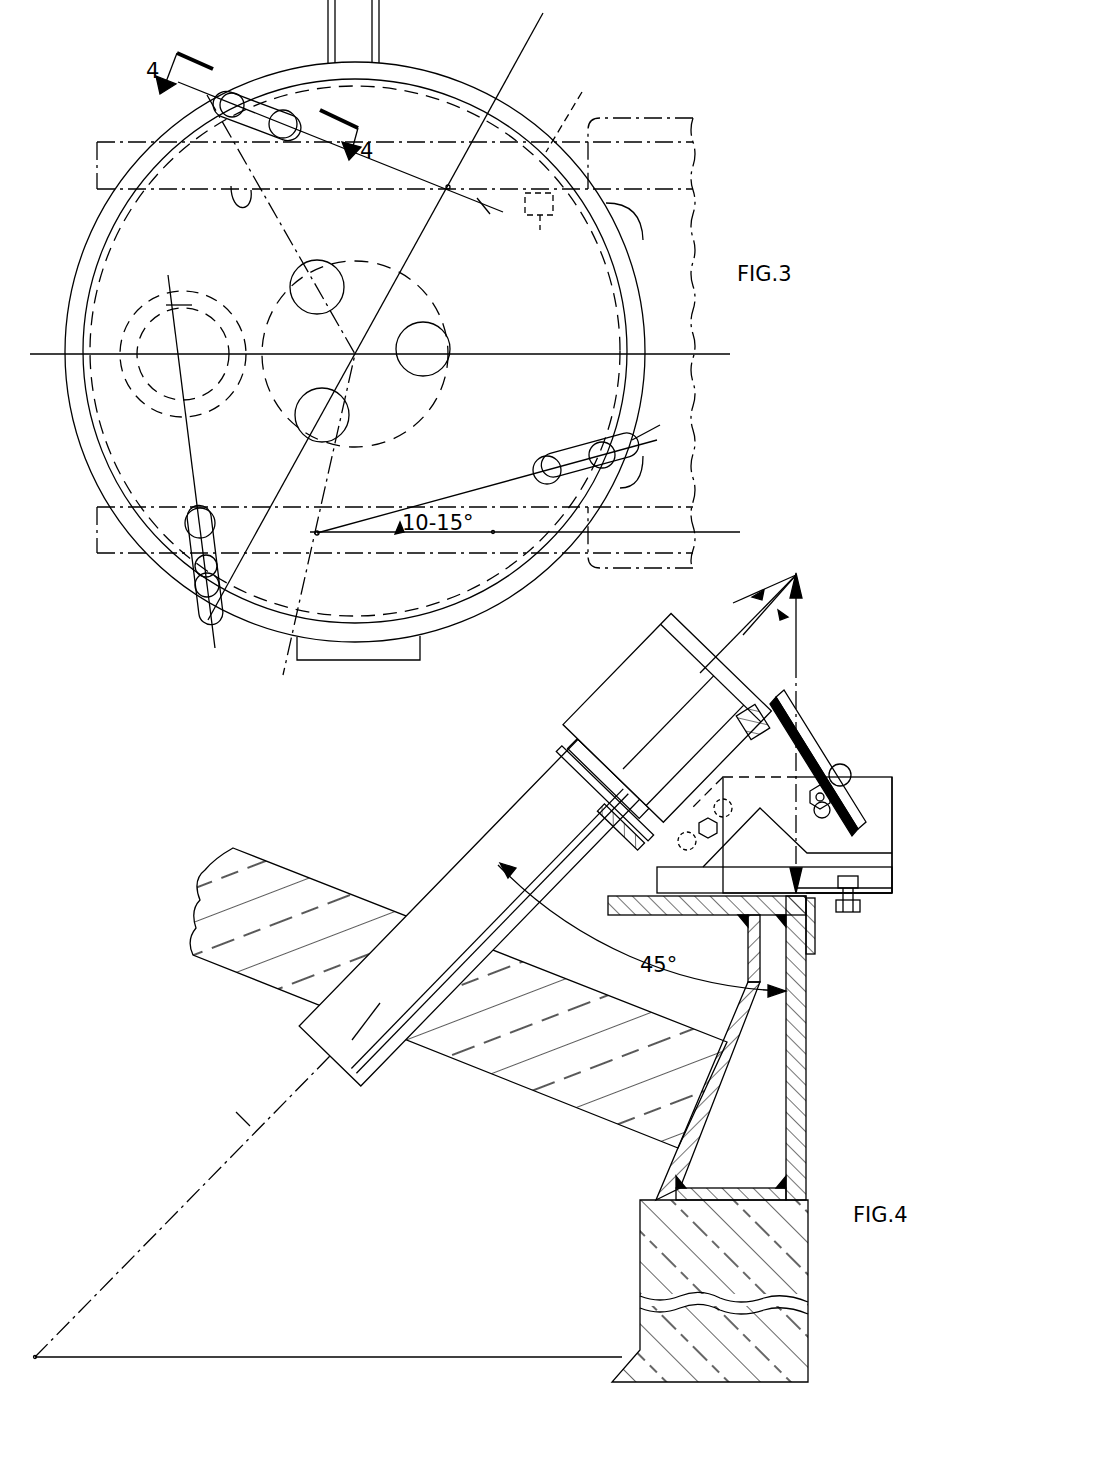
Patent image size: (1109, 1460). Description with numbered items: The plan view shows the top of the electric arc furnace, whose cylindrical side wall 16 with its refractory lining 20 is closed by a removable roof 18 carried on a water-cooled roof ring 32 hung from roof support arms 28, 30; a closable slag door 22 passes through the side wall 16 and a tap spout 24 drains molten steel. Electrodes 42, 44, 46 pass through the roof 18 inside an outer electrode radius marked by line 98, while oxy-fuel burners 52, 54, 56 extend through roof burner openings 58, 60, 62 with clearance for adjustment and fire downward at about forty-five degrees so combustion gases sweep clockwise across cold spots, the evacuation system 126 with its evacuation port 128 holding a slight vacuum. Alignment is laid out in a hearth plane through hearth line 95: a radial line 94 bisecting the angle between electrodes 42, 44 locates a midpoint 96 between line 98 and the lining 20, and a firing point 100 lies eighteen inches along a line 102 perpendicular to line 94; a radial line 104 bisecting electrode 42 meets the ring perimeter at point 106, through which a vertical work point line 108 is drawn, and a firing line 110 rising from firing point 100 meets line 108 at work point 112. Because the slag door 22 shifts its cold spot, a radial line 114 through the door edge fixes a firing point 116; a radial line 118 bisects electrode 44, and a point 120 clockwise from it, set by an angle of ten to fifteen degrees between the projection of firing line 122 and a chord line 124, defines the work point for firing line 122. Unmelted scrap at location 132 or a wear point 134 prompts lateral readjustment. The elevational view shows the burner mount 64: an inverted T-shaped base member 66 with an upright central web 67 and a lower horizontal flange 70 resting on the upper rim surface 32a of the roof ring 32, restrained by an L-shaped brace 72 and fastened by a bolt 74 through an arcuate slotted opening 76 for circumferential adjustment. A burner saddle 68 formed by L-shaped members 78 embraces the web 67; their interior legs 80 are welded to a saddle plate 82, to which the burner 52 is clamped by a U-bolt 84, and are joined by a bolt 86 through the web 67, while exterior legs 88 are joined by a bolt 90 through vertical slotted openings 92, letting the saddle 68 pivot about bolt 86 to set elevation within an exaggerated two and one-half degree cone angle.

In FIG. 4, the cylindrical side wall 16 is at (808, 1275).
In FIG. 4, the removable roof 18 is at (542, 1085).
In FIG. 3, the refractory lining 20 is at (388, 100).
In FIG. 3, the closable slag door 22 is at (320, 657).
In FIG. 3, the tap spout 24 is at (380, 20).
In FIG. 3, the roof support arm 28 is at (97, 540).
In FIG. 3, the roof support arm 30 is at (106, 150).
In FIG. 3, the water-cooled roof ring 32 is at (268, 74).
In FIG. 4, the water-cooled roof ring 32 is at (808, 1118).
In FIG. 4, the upper rim surface 32a is at (628, 895).
In FIG. 3, the electrode 42 is at (314, 275).
In FIG. 3, the electrode 44 is at (435, 345).
In FIG. 3, the electrode 46 is at (310, 425).
In FIG. 3, the oxy-fuel burner 52 is at (292, 118).
In FIG. 4, the oxy-fuel burner 52 is at (668, 692).
In FIG. 3, the oxy-fuel burner 54 is at (590, 448).
In FIG. 3, the oxy-fuel burner 56 is at (192, 515).
In FIG. 3, the roof burner opening 58 is at (280, 140).
In FIG. 4, the roof burner opening 58 is at (470, 1044).
In FIG. 3, the roof burner opening 60 is at (540, 456).
In FIG. 3, the roof burner opening 62 is at (215, 522).
In FIG. 4, the burner mount 64 is at (906, 777).
In FIG. 4, the inverted T-shaped base member 66 is at (892, 820).
In FIG. 4, the central web 67 is at (870, 780).
In FIG. 4, the burner saddle 68 is at (824, 776).
In FIG. 4, the lower horizontal flange 70 is at (862, 906).
In FIG. 4, the L-shaped brace 72 is at (816, 940).
In FIG. 4, the bolt 74 is at (862, 882).
In FIG. 4, the slotted opening 76 is at (862, 898).
In FIG. 4, the L-shaped member 78 is at (776, 744).
In FIG. 4, the interior leg 80 is at (668, 862).
In FIG. 4, the saddle plate 82 is at (758, 708).
In FIG. 4, the U-bolt 84 is at (563, 768).
In FIG. 4, the bolt 86 is at (714, 832).
In FIG. 4, the exterior leg 88 is at (818, 790).
In FIG. 4, the bolt 90 is at (812, 815).
In FIG. 4, the slotted opening 92 is at (808, 812).
In FIG. 3, the radial line 94 is at (470, 86).
In FIG. 4, the hearth line 95 is at (540, 1356).
In FIG. 3, the midpoint 96 is at (450, 186).
In FIG. 3, the outer electrode radius line 98 is at (437, 312).
In FIG. 3, the firing point 100 is at (483, 210).
In FIG. 4, the firing point 100 is at (36, 1355).
In FIG. 3, the line 102 is at (485, 212).
In FIG. 3, the radial line 104 is at (232, 188).
In FIG. 3, the point 106 is at (232, 96).
In FIG. 4, the work point line 108 is at (800, 656).
In FIG. 4, the firing line 110 is at (242, 1118).
In FIG. 4, the work point 112 is at (800, 575).
In FIG. 3, the radial line 114 is at (302, 600).
In FIG. 3, the firing point 116 is at (322, 530).
In FIG. 3, the radial line 118 is at (508, 352).
In FIG. 3, the point 120 is at (632, 440).
In FIG. 3, the firing line 122 is at (505, 476).
In FIG. 3, the chord line 124 is at (493, 532).
In FIG. 3, the evacuation system 126 is at (208, 292).
In FIG. 3, the evacuation port 128 is at (216, 350).
In FIG. 3, the location of unmelted scrap 132 is at (540, 228).
In FIG. 3, the refractory wear point 134 is at (586, 112).